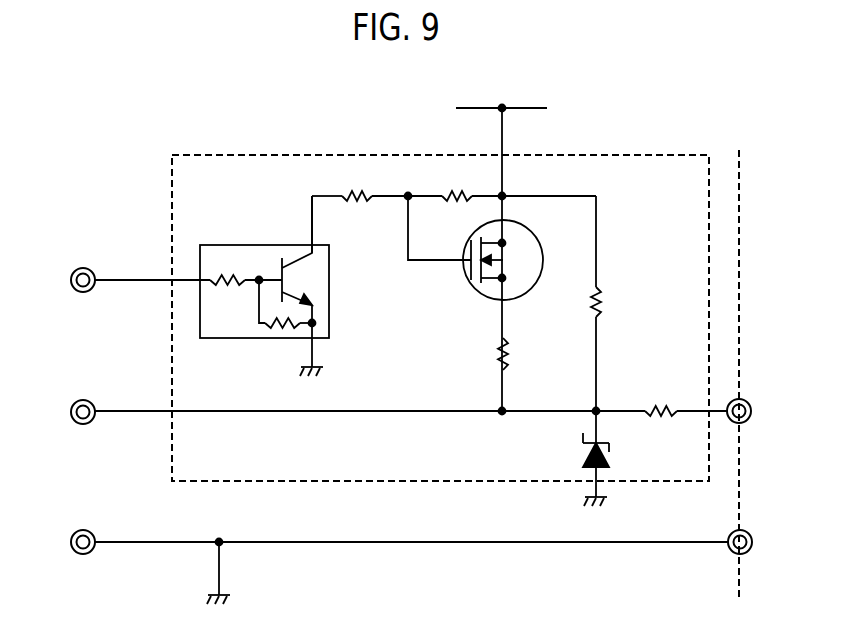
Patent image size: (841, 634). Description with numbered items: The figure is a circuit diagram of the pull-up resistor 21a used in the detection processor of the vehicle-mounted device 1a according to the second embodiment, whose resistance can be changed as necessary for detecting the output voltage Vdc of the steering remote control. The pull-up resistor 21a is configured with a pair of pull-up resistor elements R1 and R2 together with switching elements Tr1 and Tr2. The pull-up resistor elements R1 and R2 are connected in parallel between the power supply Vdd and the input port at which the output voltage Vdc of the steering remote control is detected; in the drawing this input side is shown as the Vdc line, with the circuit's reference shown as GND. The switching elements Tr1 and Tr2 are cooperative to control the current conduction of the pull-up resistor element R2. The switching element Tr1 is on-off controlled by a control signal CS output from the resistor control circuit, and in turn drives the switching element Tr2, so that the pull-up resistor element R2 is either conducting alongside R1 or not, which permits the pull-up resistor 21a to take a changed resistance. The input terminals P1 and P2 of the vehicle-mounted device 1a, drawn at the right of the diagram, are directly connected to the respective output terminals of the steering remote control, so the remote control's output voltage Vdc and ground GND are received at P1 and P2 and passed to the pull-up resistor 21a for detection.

The pull-up resistor 21a is at (247, 155).
The vehicle-mounted device 1a is at (740, 170).
The switching element Tr1 is at (264, 286).
The switching element Tr2 is at (484, 265).
The pull-up resistor element R1 is at (610, 303).
The pull-up resistor element R2 is at (517, 355).
The input terminal P1 is at (756, 413).
The input terminal P2 is at (757, 544).
The control signal CS is at (122, 282).
The power supply Vdd is at (513, 96).
The output voltage Vdc is at (336, 413).
The GND terminal GND is at (373, 566).